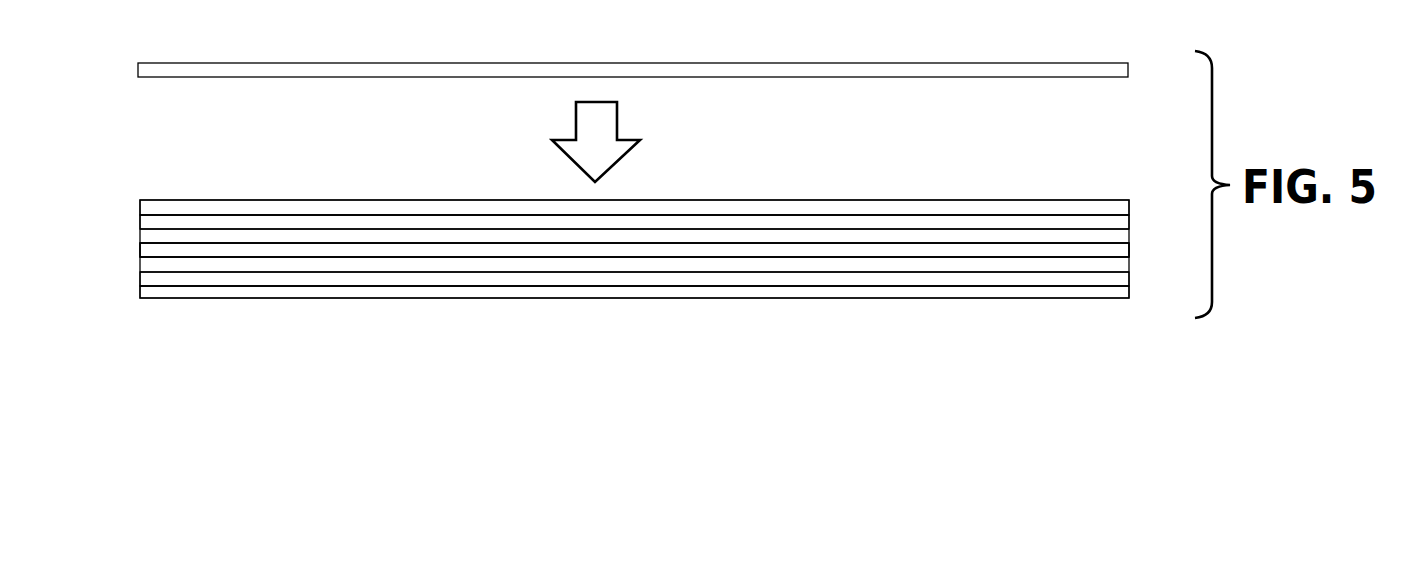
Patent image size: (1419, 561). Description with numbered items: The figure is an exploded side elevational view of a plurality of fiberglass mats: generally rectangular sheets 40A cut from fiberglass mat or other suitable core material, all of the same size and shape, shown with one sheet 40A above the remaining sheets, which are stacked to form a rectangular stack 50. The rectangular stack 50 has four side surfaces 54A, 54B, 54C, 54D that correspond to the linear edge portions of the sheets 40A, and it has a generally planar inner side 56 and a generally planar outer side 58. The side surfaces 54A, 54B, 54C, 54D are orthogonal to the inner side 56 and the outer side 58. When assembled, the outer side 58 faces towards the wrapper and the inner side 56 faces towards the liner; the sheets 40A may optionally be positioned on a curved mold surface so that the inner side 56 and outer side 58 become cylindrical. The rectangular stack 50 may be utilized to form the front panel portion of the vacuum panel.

The sheet 40A is at (1007, 62).
The rectangular stack 50 is at (1138, 290).
The side surface 54A is at (640, 282).
The side surface 54B is at (140, 250).
The side surface 54C is at (482, 223).
The side surface 54D is at (1129, 248).
The inner side 56 is at (365, 200).
The outer side 58 is at (367, 300).